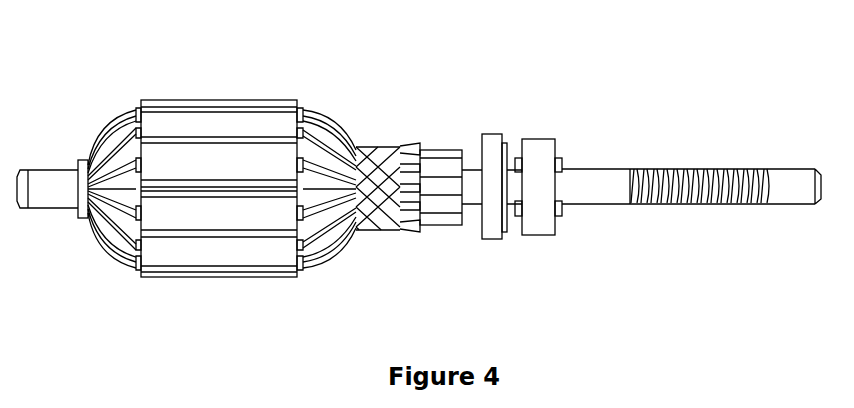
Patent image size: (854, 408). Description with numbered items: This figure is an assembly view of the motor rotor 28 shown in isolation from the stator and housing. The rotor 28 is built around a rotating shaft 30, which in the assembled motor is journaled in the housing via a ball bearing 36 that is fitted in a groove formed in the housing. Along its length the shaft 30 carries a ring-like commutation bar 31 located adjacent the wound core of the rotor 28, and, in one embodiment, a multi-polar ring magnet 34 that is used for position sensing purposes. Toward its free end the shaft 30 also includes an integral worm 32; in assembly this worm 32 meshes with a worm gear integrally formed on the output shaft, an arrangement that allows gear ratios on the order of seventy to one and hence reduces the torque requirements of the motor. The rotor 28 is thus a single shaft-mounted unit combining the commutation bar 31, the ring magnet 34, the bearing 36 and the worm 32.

The rotor 28 is at (427, 108).
The rotating shaft 30 is at (602, 168).
The commutation bar 31 is at (437, 228).
The worm 32 is at (697, 203).
The multi-polar ring magnet 34 is at (490, 240).
The ball bearing 36 is at (547, 236).